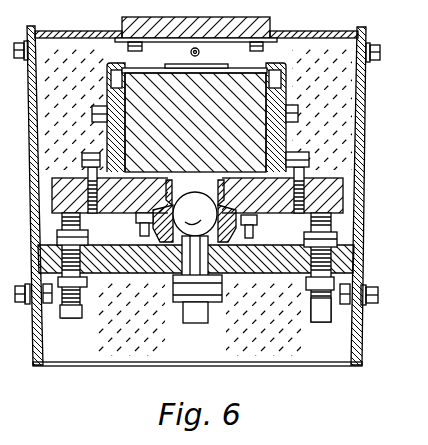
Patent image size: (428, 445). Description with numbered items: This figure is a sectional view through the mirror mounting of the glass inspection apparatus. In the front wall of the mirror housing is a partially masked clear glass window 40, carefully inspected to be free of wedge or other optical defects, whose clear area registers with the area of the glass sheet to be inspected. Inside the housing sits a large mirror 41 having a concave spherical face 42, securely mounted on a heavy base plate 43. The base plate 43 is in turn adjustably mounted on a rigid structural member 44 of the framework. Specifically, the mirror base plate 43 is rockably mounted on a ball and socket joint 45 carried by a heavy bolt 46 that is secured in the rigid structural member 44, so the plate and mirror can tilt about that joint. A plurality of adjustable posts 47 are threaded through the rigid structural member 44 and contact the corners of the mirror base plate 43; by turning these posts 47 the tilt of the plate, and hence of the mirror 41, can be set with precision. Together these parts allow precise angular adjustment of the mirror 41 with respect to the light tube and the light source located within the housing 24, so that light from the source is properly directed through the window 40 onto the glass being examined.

The housing 24 is at (366, 139).
The clear glass window 40 is at (267, 22).
The mirror 41 is at (239, 137).
The concave spherical face 42 is at (238, 70).
The base plate 43 is at (317, 202).
The rigid structural member 44 is at (337, 258).
The ball and socket joint 45 is at (197, 216).
The heavy bolt 46 is at (220, 287).
The adjustable posts 47 is at (334, 227).